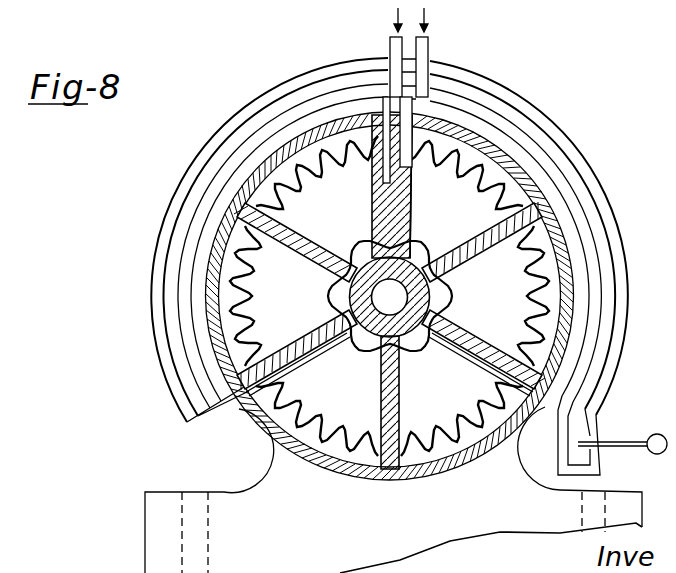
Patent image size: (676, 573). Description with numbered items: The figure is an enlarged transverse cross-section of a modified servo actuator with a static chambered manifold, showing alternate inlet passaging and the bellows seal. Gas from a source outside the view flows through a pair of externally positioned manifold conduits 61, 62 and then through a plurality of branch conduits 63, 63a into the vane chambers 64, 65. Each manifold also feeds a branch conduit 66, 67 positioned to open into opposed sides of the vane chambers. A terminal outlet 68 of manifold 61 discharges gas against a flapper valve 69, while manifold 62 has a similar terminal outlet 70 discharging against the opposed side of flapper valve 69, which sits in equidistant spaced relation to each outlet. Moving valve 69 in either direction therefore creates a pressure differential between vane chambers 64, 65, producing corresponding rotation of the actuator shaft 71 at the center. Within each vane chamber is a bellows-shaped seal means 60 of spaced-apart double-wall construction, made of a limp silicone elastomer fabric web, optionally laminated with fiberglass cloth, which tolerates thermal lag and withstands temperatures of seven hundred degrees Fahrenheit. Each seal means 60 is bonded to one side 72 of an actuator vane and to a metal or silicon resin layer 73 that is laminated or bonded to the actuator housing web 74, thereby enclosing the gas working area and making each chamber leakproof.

The bellows-shaped seal means 60 is at (462, 218).
The manifold conduit 61 is at (452, 63).
The manifold conduit 62 is at (473, 100).
The branch conduit 63 is at (383, 106).
The branch conduit 63a is at (405, 110).
The vane chamber 64 is at (341, 200).
The vane chamber 65 is at (459, 216).
The branch conduit 66 is at (372, 198).
The branch conduit 67 is at (414, 174).
The terminal outlet 68 is at (602, 441).
The flapper valve 69 is at (648, 436).
The terminal outlet 70 is at (599, 454).
The actuator shaft 71 is at (362, 252).
The side of actuator vane 72 is at (466, 242).
The metal or silicon resin layer 73 is at (371, 166).
The actuator housing web 74 is at (411, 235).